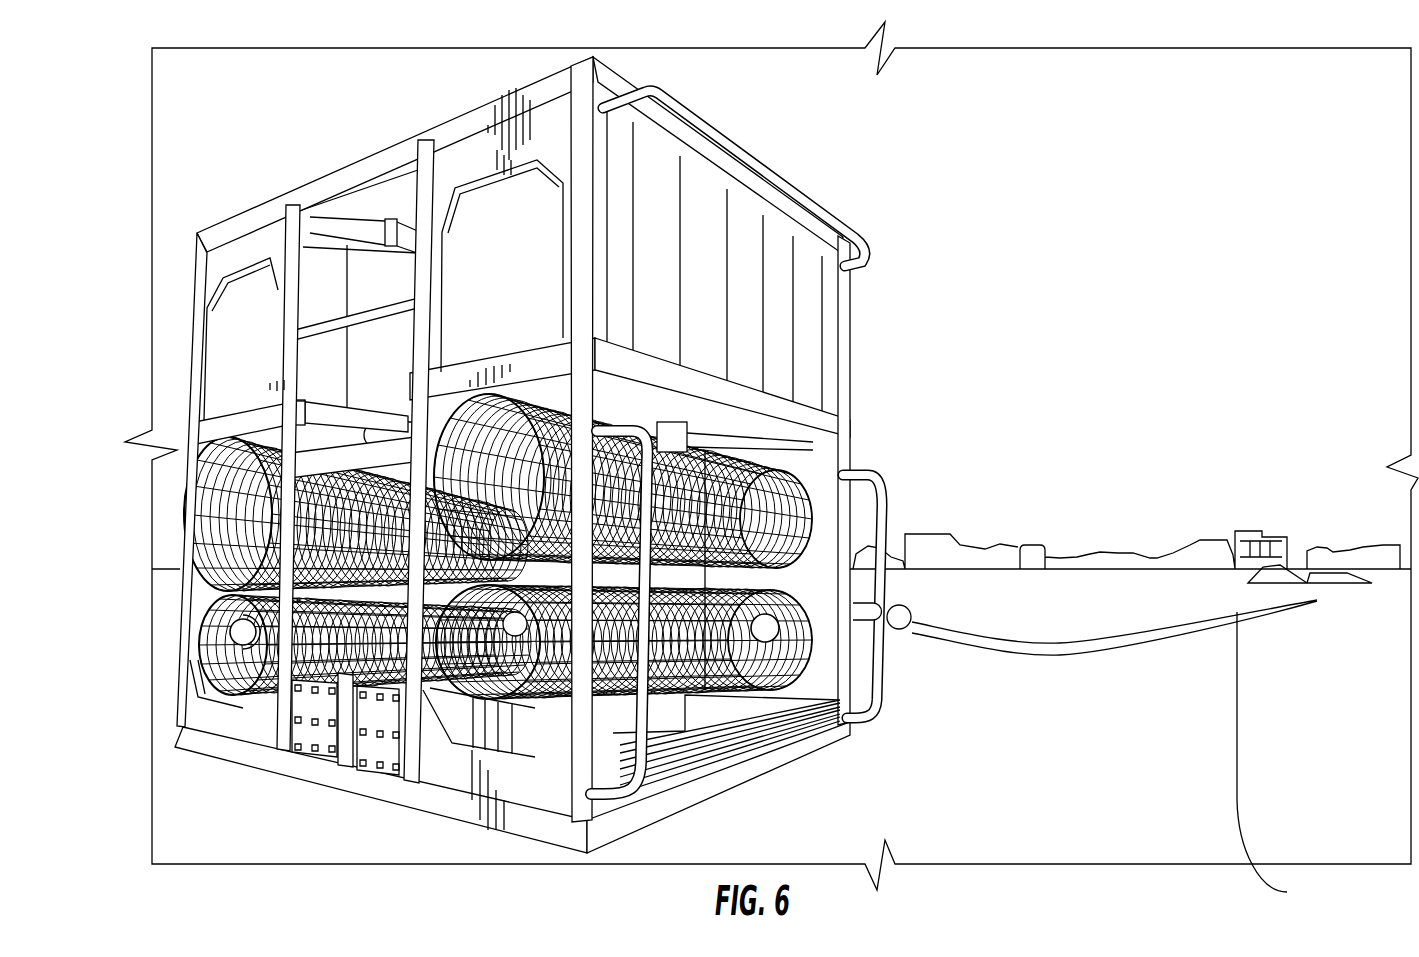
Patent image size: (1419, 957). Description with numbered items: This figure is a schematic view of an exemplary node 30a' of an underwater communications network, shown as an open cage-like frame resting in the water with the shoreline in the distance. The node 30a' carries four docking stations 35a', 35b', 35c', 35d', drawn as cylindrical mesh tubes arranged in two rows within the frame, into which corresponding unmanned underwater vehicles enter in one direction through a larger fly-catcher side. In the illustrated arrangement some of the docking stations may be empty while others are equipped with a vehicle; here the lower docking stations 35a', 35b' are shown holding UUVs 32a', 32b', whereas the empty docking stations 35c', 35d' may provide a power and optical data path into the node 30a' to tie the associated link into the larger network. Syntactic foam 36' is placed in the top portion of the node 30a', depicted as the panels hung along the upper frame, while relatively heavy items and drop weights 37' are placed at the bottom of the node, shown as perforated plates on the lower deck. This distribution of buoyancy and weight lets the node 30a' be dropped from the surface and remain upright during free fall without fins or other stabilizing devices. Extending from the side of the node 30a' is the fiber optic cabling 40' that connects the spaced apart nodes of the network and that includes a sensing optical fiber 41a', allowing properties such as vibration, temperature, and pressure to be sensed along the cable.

The node 30a' is at (528, 464).
The syntactic foam 36' is at (463, 211).
The docking station 35c' is at (454, 511).
The docking station 35d' is at (305, 514).
The docking station 35b' is at (306, 650).
The docking station 35a' is at (699, 756).
The UUV 32b' is at (172, 650).
The UUV 32a' is at (863, 770).
The drop weights 37' is at (345, 794).
The fiber optic cabling 40' is at (1114, 764).
The sensing optical fiber 41a' is at (1286, 758).